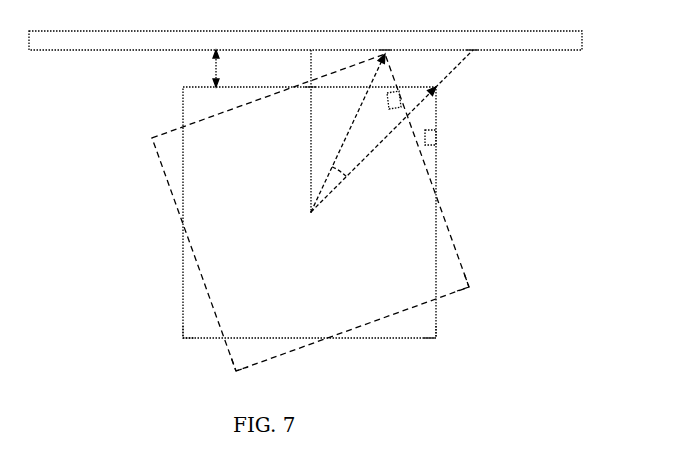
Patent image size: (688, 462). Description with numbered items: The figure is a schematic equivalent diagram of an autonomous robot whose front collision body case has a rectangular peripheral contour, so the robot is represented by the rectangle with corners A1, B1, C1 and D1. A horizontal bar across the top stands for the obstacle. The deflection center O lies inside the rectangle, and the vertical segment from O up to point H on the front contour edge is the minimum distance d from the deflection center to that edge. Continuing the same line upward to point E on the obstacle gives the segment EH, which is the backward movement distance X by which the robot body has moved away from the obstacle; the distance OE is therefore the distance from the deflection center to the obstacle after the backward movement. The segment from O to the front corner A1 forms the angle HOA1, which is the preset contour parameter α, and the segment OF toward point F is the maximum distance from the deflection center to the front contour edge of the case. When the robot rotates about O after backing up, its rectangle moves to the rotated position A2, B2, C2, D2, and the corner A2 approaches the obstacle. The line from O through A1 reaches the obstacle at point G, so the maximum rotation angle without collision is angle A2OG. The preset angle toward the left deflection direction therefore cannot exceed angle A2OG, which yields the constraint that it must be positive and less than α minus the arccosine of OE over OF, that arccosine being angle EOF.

The rectangle corner A1 is at (392, 131).
The rotated corner A2 is at (360, 130).
The rectangle corner B1 is at (444, 337).
The rotated corner B2 is at (479, 285).
The rectangle corner C1 is at (180, 337).
The rotated corner C2 is at (234, 376).
The rectangle corner D1 is at (296, 209).
The rotated corner D2 is at (298, 212).
The point E on obstacle E is at (309, 113).
The point F is at (386, 32).
The point G is at (473, 32).
The point H on front contour edge H is at (306, 96).
The deflection center O is at (311, 223).
The backward movement distance X is at (225, 68).